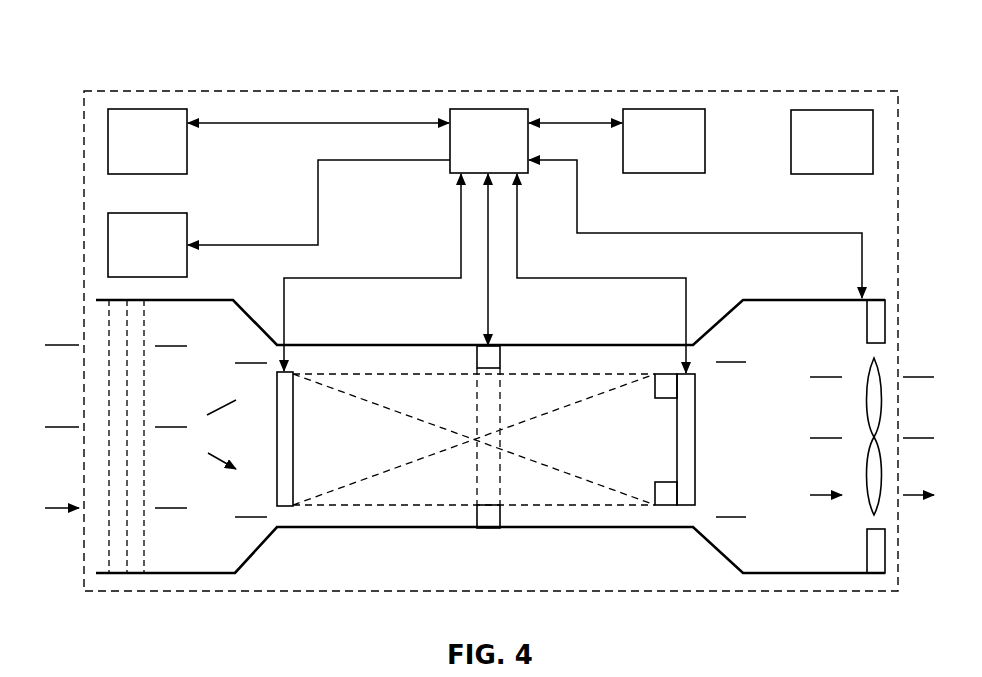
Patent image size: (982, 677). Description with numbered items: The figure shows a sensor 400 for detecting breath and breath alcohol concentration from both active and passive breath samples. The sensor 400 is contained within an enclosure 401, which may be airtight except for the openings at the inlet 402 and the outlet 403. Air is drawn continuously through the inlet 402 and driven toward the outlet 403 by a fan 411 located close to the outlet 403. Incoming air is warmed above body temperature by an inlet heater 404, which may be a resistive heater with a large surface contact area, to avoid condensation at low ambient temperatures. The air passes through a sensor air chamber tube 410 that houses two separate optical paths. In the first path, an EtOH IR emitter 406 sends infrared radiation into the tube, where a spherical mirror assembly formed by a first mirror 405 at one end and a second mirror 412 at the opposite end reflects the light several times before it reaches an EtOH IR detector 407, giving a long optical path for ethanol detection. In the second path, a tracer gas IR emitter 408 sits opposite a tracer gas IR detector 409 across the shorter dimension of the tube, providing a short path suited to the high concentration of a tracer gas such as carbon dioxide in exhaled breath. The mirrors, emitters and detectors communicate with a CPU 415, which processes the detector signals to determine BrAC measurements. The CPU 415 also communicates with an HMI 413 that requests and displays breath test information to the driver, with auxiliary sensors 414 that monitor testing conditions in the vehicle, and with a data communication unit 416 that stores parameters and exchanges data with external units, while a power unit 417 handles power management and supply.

The sensor 400 is at (186, 60).
The enclosure 401 is at (332, 592).
The inlet 402 is at (92, 454).
The outlet 403 is at (888, 427).
The inlet heater 404 is at (127, 409).
The first mirror 405 is at (285, 415).
The EtOH IR emitter 406 is at (653, 385).
The EtOH IR detector 407 is at (667, 480).
The tracer gas IR emitter 408 is at (475, 353).
The tracer gas IR detector 409 is at (502, 530).
The sensor air chamber tube 410 is at (427, 530).
The fan 411 is at (868, 460).
The second mirror 412 is at (688, 405).
The HMI 413 is at (187, 231).
The auxiliary sensors 414 is at (187, 143).
The CPU 415 is at (450, 173).
The data communication unit 416 is at (667, 175).
The power unit 417 is at (833, 176).